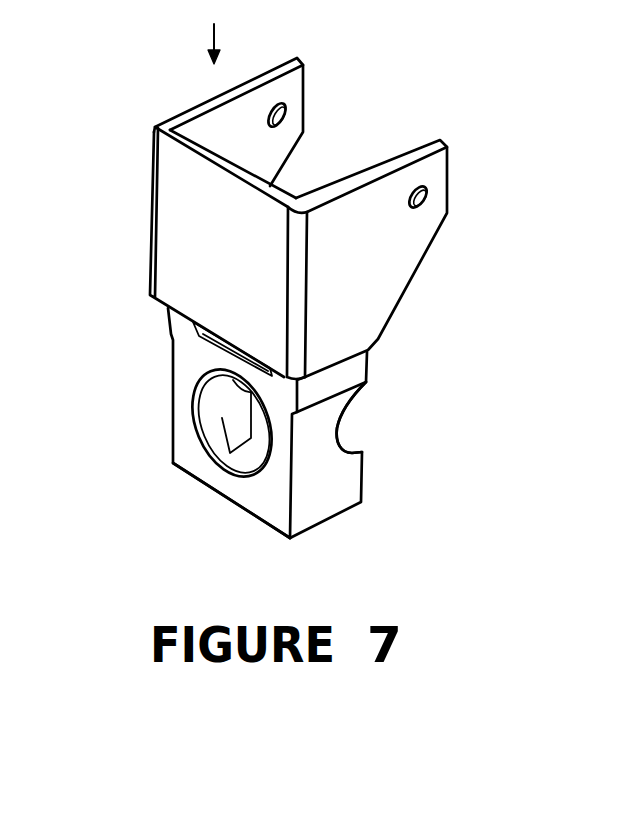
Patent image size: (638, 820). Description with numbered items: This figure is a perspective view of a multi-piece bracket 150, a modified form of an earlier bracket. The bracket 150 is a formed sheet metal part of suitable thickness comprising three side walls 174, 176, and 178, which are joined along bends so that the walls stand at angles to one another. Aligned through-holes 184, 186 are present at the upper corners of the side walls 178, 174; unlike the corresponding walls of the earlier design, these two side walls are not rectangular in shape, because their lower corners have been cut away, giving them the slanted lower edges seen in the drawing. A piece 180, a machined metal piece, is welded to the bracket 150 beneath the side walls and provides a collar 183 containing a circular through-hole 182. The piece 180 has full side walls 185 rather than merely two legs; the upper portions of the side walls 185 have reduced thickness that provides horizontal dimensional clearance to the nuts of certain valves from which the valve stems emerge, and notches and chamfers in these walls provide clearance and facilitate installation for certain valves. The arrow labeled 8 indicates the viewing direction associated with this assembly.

The view direction arrow for FIG. 8 is at (214, 30).
The bracket 150 is at (313, 218).
The side wall 174 is at (233, 122).
The side wall 176 is at (237, 266).
The side wall 178 is at (416, 258).
The piece 180 is at (264, 428).
The circular through-hole 182 is at (200, 417).
The collar 183 is at (264, 506).
The through-hole 184 is at (428, 203).
The side walls 185 is at (222, 418).
The through-hole 186 is at (284, 110).